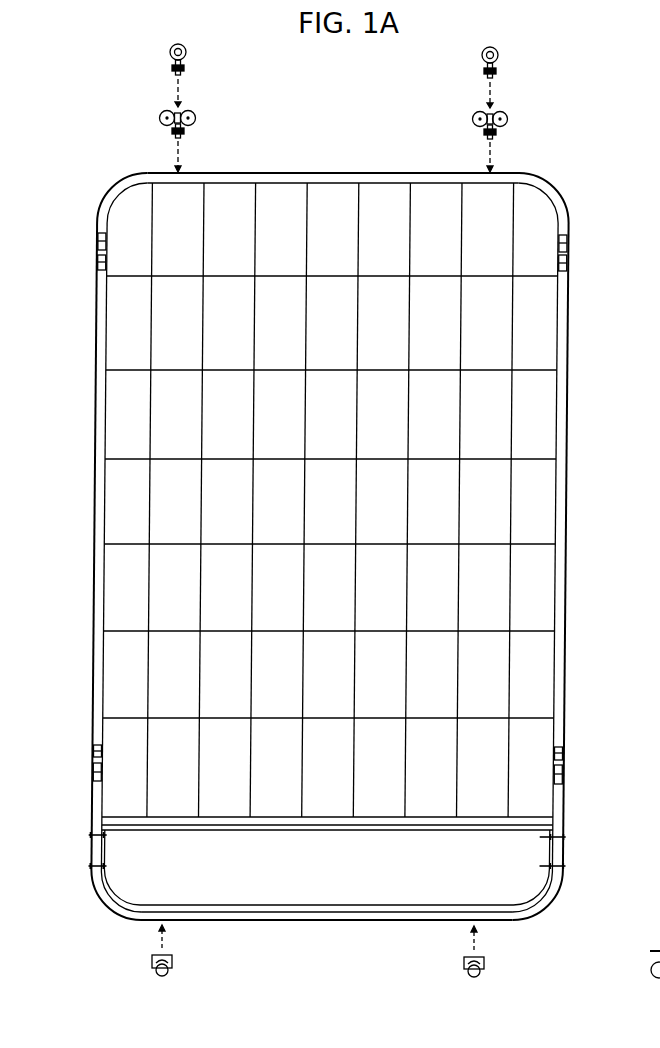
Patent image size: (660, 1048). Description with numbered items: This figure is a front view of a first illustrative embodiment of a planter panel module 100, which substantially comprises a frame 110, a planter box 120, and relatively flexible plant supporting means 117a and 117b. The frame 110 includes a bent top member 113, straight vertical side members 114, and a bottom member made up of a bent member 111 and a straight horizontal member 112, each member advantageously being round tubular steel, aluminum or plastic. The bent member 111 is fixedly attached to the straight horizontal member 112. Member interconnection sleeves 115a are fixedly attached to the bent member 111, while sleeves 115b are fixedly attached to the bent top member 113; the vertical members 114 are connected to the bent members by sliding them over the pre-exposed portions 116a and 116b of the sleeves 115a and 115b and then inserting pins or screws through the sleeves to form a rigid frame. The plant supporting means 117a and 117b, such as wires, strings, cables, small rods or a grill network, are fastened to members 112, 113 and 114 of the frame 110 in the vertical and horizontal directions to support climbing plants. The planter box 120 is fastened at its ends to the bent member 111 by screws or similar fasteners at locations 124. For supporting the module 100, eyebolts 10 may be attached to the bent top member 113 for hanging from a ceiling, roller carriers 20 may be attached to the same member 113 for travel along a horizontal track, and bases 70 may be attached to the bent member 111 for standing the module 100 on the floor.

The eyebolt 10 is at (181, 65).
The roller carrier 20 is at (196, 112).
The base 70 is at (228, 972).
The planter panel module 100 is at (328, 147).
The frame 110 is at (573, 167).
The bent member 111 is at (264, 920).
The straight horizontal member 112 is at (255, 817).
The bent top member 113 is at (328, 173).
The straight vertical side member 114 is at (97, 411).
The member interconnection sleeve 115a is at (92, 771).
The member interconnection sleeve 115b is at (97, 240).
The pre-exposed portion of sleeve 116a is at (94, 755).
The pre-exposed portion of sleeve 116b is at (97, 264).
The relatively flexible plant supporting means 117a is at (148, 483).
The relatively flexible plant supporting means 117b is at (543, 370).
The planter box 120 is at (510, 866).
The fastening location 124 is at (88, 835).